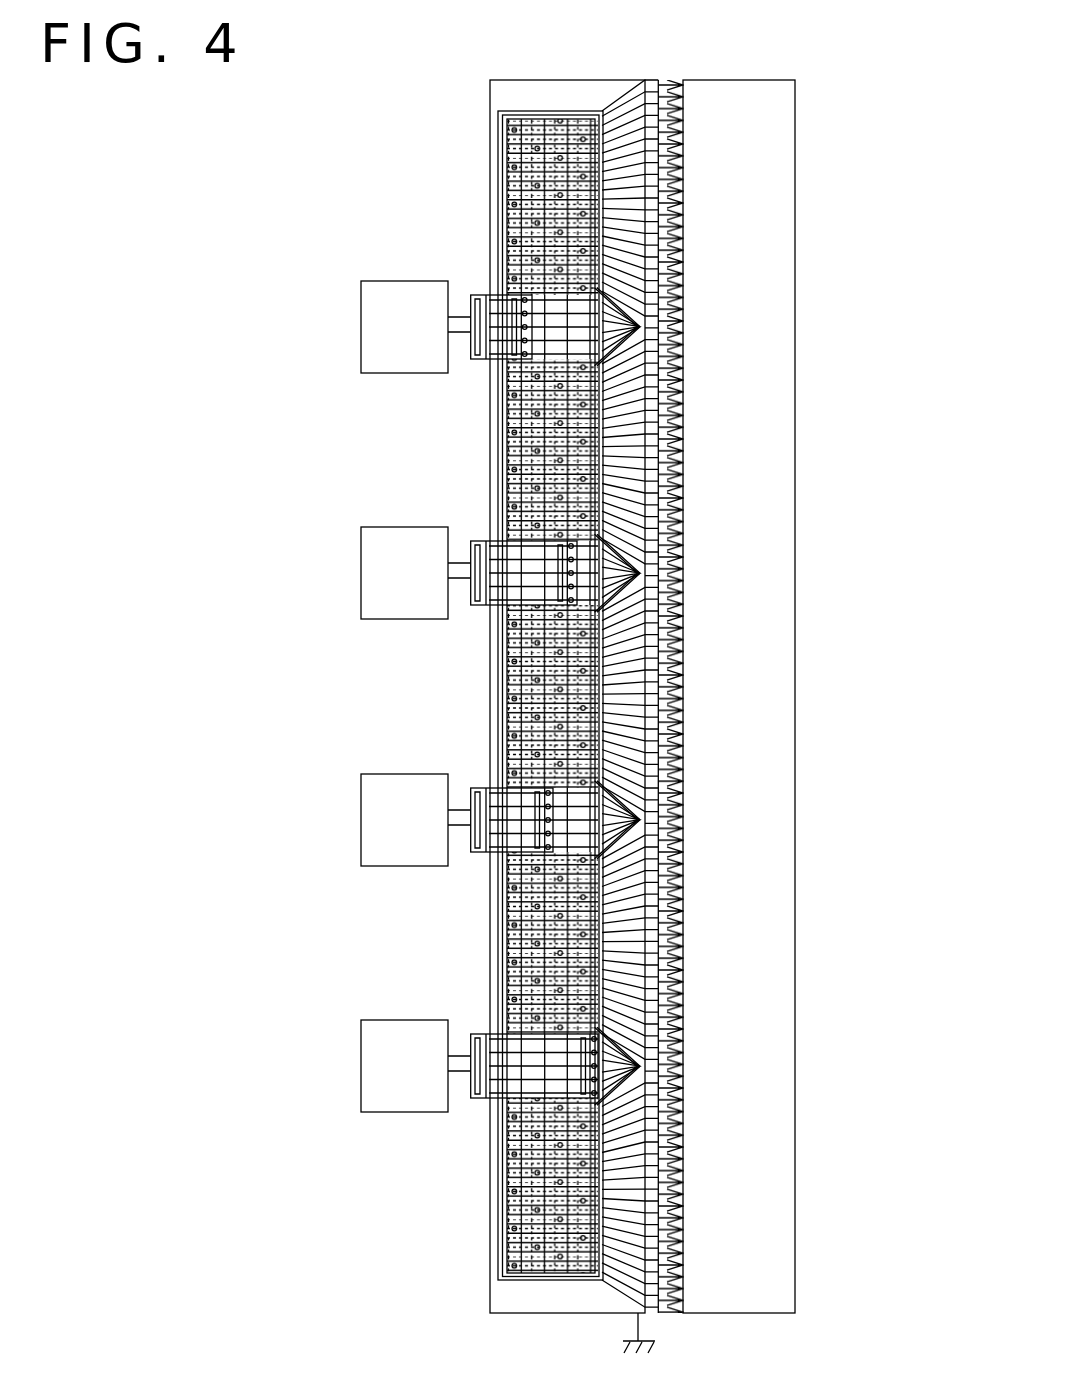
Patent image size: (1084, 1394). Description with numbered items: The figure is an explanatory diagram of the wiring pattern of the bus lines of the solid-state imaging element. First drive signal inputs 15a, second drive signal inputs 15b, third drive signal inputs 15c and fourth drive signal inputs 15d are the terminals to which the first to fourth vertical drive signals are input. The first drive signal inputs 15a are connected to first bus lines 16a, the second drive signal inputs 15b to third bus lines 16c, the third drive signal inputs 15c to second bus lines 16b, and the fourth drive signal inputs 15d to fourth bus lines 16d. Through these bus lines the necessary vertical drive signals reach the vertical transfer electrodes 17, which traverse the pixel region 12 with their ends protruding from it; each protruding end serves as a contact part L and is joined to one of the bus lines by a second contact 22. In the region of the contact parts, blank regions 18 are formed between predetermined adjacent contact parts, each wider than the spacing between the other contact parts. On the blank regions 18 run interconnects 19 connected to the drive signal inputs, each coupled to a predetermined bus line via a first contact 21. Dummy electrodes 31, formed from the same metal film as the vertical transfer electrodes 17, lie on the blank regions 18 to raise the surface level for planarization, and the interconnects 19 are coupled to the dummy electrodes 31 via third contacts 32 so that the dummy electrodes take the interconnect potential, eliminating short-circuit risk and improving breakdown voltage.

The pixel region 12 is at (790, 190).
The first drive signal inputs 15a is at (429, 1080).
The second drive signal inputs 15b is at (429, 834).
The third drive signal inputs 15c is at (429, 587).
The fourth drive signal inputs 15d is at (429, 341).
The first bus lines 16a is at (582, 120).
The second bus lines 16b is at (560, 128).
The third bus lines 16c is at (538, 140).
The fourth bus lines 16d is at (513, 150).
The vertical transfer electrodes 17 is at (618, 1290).
The blank regions 18 is at (646, 326).
The interconnects 19 is at (488, 359).
The first contact 21 is at (512, 315).
The second contacts 22 is at (580, 218).
The dummy electrodes 31 is at (614, 347).
The third contacts 32 is at (630, 315).
The contact part L is at (548, 1280).